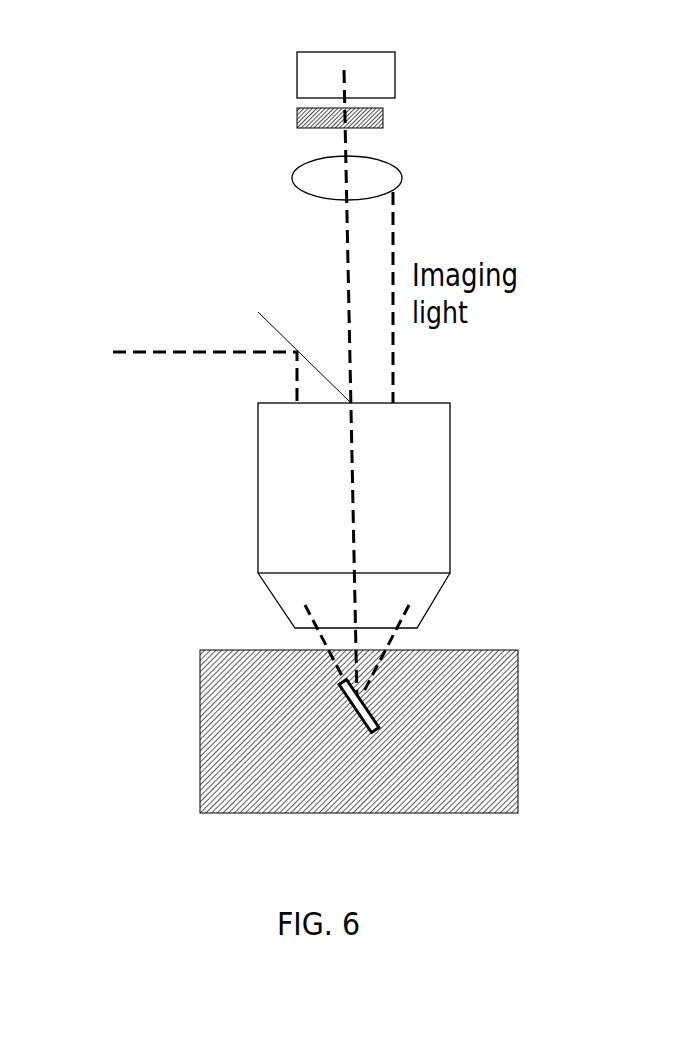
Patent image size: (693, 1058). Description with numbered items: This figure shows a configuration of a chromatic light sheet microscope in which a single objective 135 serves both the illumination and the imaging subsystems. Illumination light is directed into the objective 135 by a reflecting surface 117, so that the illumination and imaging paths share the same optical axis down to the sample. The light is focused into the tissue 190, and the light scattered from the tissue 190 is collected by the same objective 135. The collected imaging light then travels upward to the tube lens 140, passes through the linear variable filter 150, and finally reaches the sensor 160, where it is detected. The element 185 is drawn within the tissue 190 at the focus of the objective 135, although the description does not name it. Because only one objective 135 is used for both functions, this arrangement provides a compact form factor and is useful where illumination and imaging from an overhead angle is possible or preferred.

The sensor 160 is at (423, 77).
The linear variable filter 150 is at (399, 115).
The tube lens 140 is at (272, 184).
The reflecting surface 117 is at (315, 340).
The objective 135 is at (428, 488).
The probe tip 185 is at (393, 708).
The tissue 190 is at (426, 730).